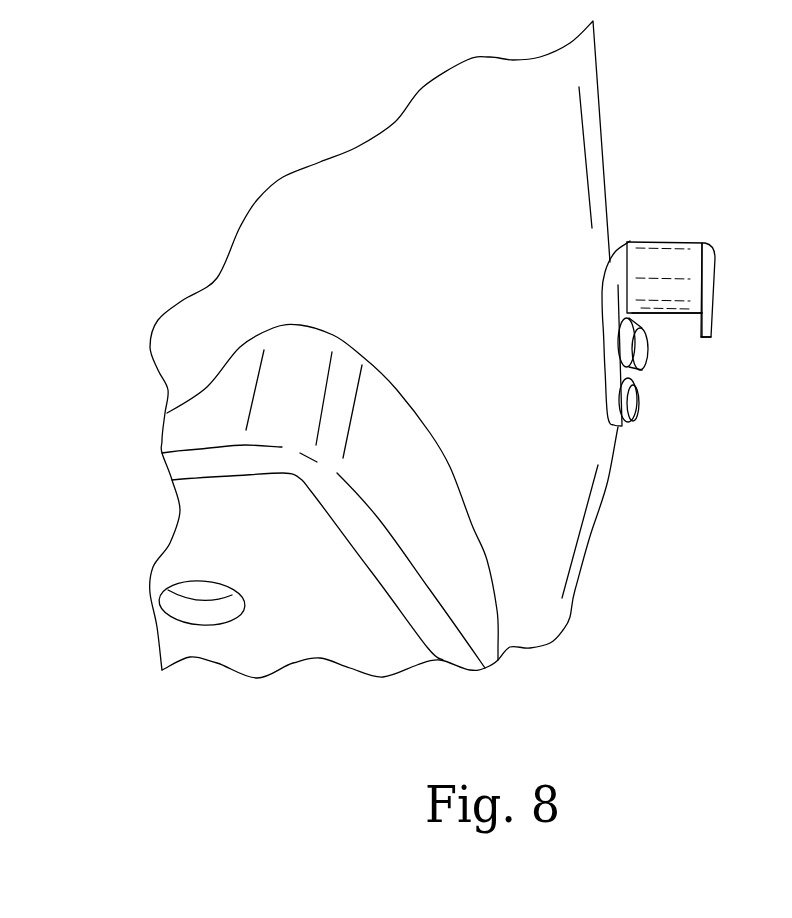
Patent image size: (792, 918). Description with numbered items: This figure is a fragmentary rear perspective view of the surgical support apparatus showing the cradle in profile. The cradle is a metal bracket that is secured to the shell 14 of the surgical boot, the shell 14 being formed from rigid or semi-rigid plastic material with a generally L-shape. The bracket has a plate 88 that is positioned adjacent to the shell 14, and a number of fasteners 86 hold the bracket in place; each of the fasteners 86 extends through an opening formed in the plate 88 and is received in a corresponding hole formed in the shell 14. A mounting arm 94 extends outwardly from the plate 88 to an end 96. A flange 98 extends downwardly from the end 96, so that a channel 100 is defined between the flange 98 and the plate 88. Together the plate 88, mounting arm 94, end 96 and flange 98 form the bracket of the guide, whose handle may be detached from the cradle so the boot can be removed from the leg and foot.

The shell 14 is at (550, 547).
The fasteners 86 is at (637, 417).
The plate 88 is at (608, 385).
The mounting arm 94 is at (660, 253).
The end 96 is at (697, 250).
The flange 98 is at (708, 323).
The channel 100 is at (673, 312).